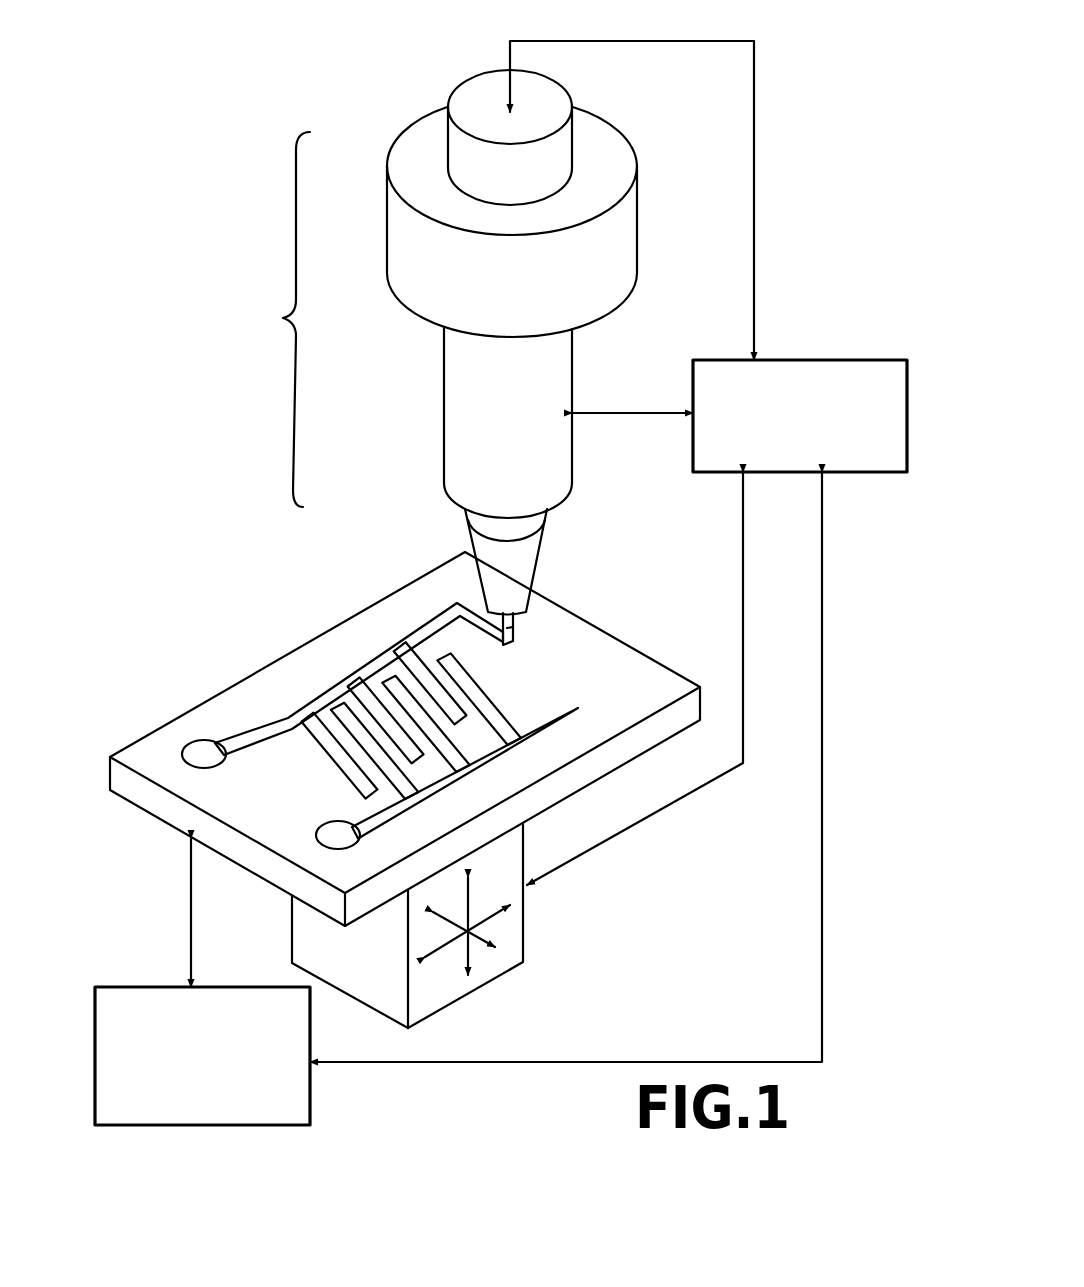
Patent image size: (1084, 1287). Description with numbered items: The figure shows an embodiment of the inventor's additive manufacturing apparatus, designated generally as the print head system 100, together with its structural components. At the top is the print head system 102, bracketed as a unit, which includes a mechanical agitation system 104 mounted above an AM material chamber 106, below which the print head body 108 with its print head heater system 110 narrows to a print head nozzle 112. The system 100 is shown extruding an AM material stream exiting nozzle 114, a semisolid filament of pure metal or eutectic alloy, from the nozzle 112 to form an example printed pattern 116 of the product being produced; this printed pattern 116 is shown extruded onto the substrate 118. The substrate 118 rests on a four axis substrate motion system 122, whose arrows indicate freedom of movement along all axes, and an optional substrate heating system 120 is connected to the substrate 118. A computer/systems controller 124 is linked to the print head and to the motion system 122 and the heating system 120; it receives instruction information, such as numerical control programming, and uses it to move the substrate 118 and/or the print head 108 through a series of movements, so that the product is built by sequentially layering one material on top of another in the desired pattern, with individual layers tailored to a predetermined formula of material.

The print head system 100 is at (250, 150).
The print head system 102 is at (424, 358).
The mechanical agitation system 104 is at (478, 105).
The AM material chamber 106 is at (532, 301).
The print head body 108 is at (490, 528).
The print head heater system 110 is at (457, 370).
The print head nozzle 112 is at (520, 575).
The AM material stream exiting nozzle 114 is at (515, 637).
The example printed pattern 116 is at (320, 685).
The substrate 118 is at (158, 753).
The substrate heating system (optional) 120 is at (130, 987).
The four axis substrate motion system 122 is at (525, 932).
The computer/systems controller 124 is at (838, 360).